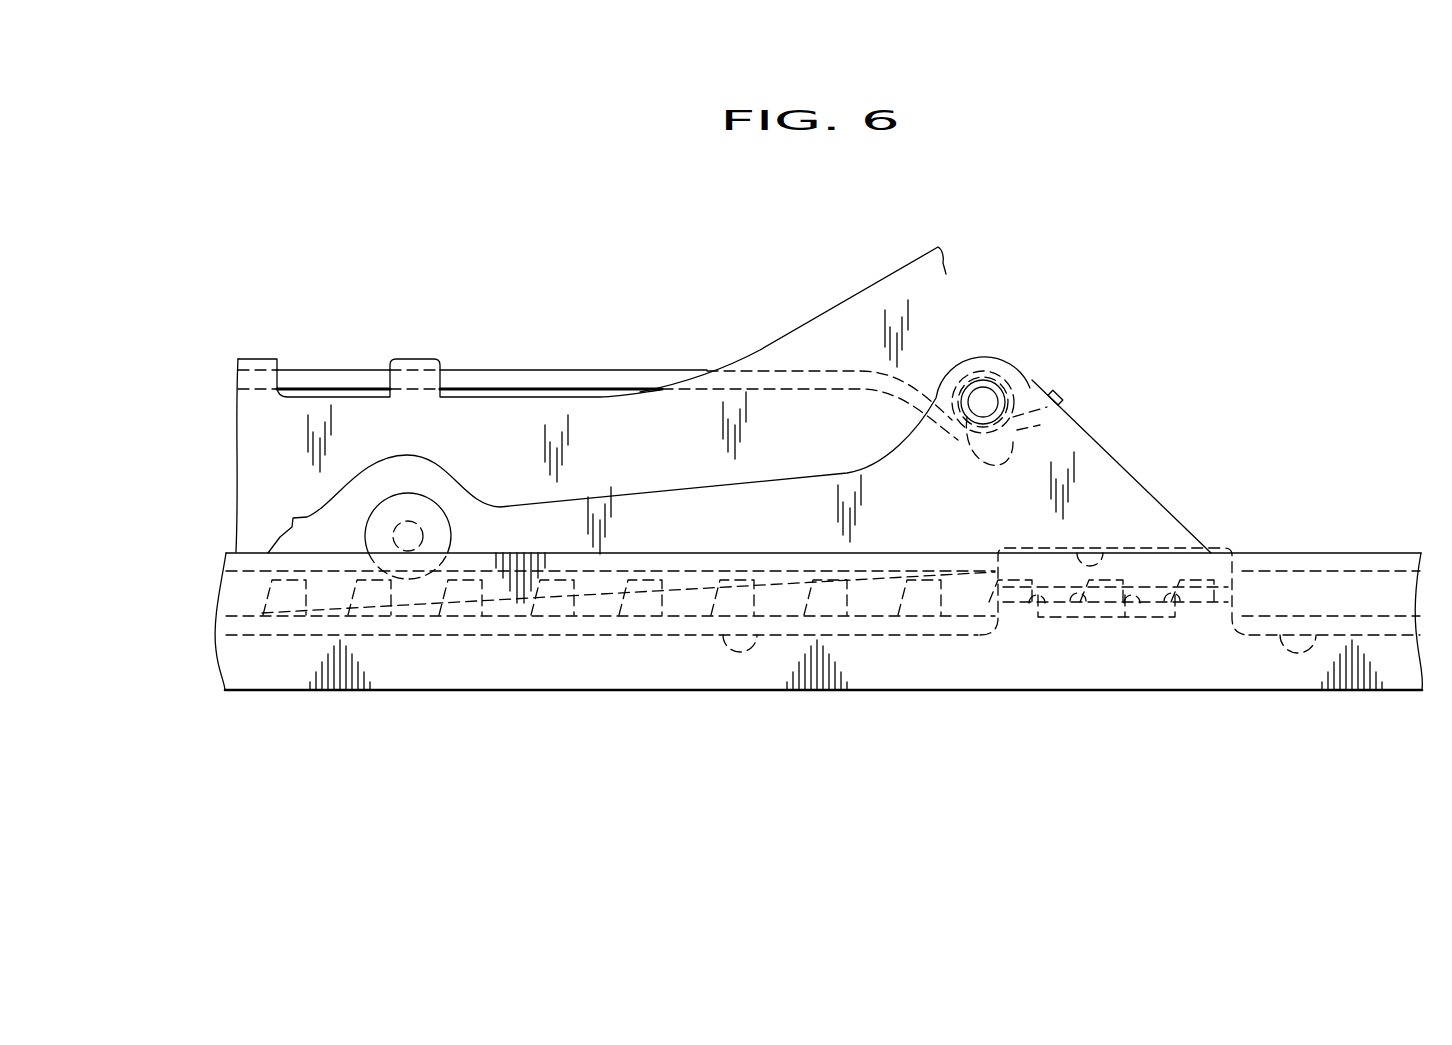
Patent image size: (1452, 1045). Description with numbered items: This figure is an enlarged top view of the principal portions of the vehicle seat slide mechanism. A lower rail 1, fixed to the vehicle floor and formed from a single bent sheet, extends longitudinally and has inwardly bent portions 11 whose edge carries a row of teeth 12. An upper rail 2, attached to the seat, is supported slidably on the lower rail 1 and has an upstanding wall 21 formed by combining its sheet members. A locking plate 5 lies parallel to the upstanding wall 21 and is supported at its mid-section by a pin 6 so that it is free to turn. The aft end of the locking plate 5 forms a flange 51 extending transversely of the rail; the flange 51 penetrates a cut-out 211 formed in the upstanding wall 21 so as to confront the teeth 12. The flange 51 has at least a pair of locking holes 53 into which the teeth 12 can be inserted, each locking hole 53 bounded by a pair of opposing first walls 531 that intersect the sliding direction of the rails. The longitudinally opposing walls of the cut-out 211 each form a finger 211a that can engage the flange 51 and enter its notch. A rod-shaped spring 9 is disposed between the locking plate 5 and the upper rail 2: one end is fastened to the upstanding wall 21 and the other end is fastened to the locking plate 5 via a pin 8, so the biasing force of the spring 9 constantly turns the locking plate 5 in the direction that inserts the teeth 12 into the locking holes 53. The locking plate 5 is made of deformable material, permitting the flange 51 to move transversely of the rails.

The lower rail 1 is at (393, 692).
The inwardly bent portions 11 is at (252, 597).
The teeth 12 is at (690, 598).
The upper rail 2 is at (832, 305).
The upstanding wall 21 is at (518, 425).
The cut-out 211 is at (1103, 550).
The finger 211a is at (1010, 608).
The locking plate 5 is at (675, 490).
The flange 51 is at (1107, 596).
The locking holes 53 is at (1080, 596).
The first walls 531 is at (1040, 618).
The pin 6 is at (387, 527).
The pin 8 is at (983, 401).
The rod-shaped spring 9 is at (330, 388).